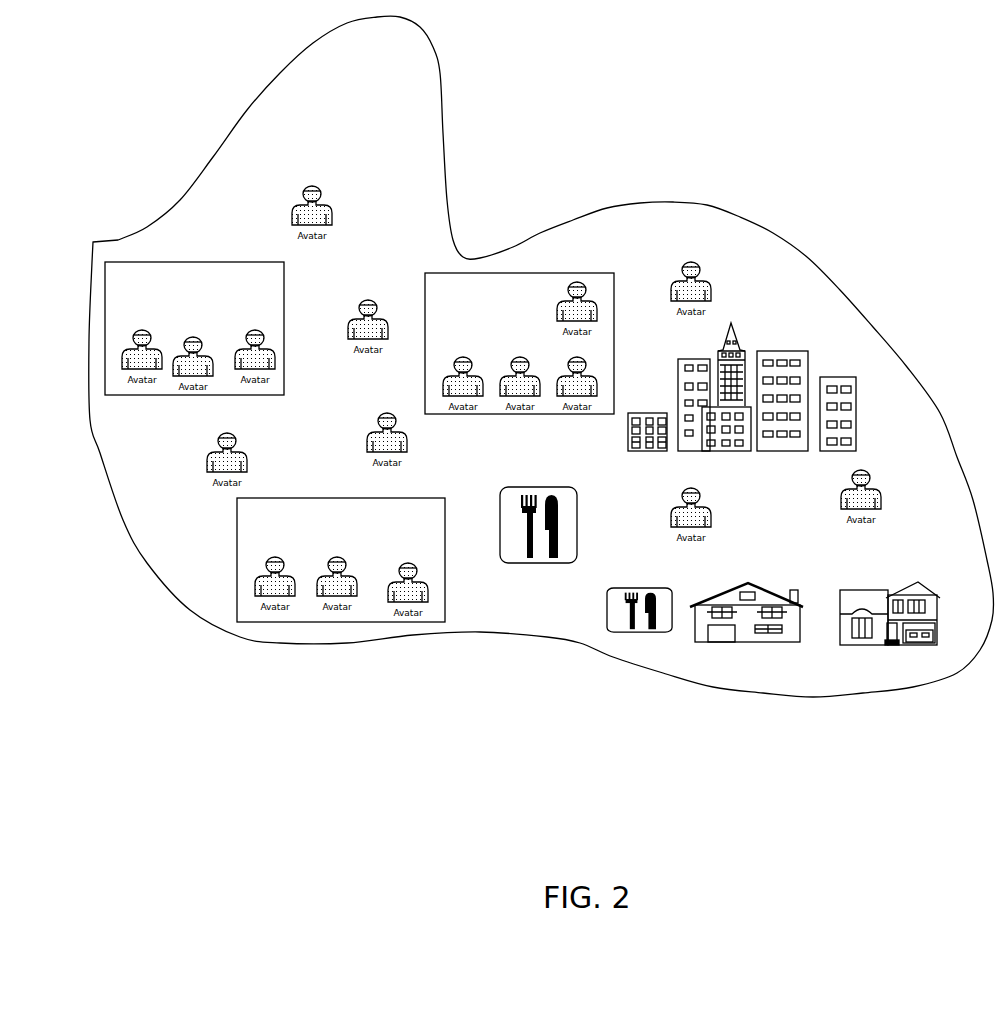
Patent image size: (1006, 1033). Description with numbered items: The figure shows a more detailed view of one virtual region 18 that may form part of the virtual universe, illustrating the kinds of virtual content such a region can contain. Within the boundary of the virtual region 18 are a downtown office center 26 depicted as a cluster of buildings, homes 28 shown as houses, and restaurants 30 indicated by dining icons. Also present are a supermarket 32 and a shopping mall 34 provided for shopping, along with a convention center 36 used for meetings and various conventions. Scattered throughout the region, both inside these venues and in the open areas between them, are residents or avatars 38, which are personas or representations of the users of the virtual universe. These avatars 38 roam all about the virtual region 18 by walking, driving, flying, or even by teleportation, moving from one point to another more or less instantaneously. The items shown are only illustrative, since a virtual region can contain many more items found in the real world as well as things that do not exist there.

The virtual region 18 is at (442, 70).
The downtown office center 26 is at (802, 343).
The homes 28 is at (757, 642).
The restaurants 30 is at (577, 532).
The supermarket 32 is at (195, 262).
The shopping mall 34 is at (237, 560).
The convention center 36 is at (510, 414).
The avatars 38 is at (332, 200).